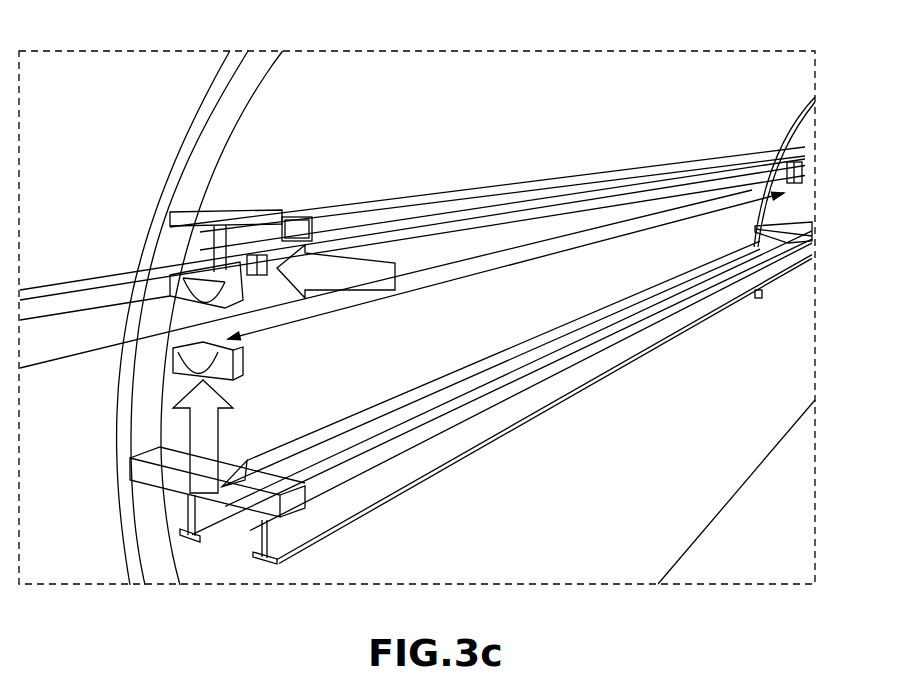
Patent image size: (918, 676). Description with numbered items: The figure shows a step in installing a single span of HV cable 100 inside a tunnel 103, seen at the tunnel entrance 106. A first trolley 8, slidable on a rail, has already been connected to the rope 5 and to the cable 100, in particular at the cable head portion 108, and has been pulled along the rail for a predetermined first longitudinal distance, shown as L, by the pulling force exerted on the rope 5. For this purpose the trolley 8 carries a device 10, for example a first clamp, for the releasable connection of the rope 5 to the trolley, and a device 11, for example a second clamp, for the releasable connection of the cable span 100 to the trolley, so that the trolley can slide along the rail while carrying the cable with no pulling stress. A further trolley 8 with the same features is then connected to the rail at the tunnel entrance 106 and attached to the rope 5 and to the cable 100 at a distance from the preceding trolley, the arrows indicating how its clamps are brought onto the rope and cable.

The rope 5 is at (513, 205).
The trolley 8 is at (203, 252).
The device 10 is at (251, 237).
The device 11 is at (160, 371).
The single span of HV cable 100 is at (453, 245).
The tunnel 103 is at (571, 118).
The tunnel entrance 106 is at (308, 110).
The cable head portion 108 is at (757, 183).